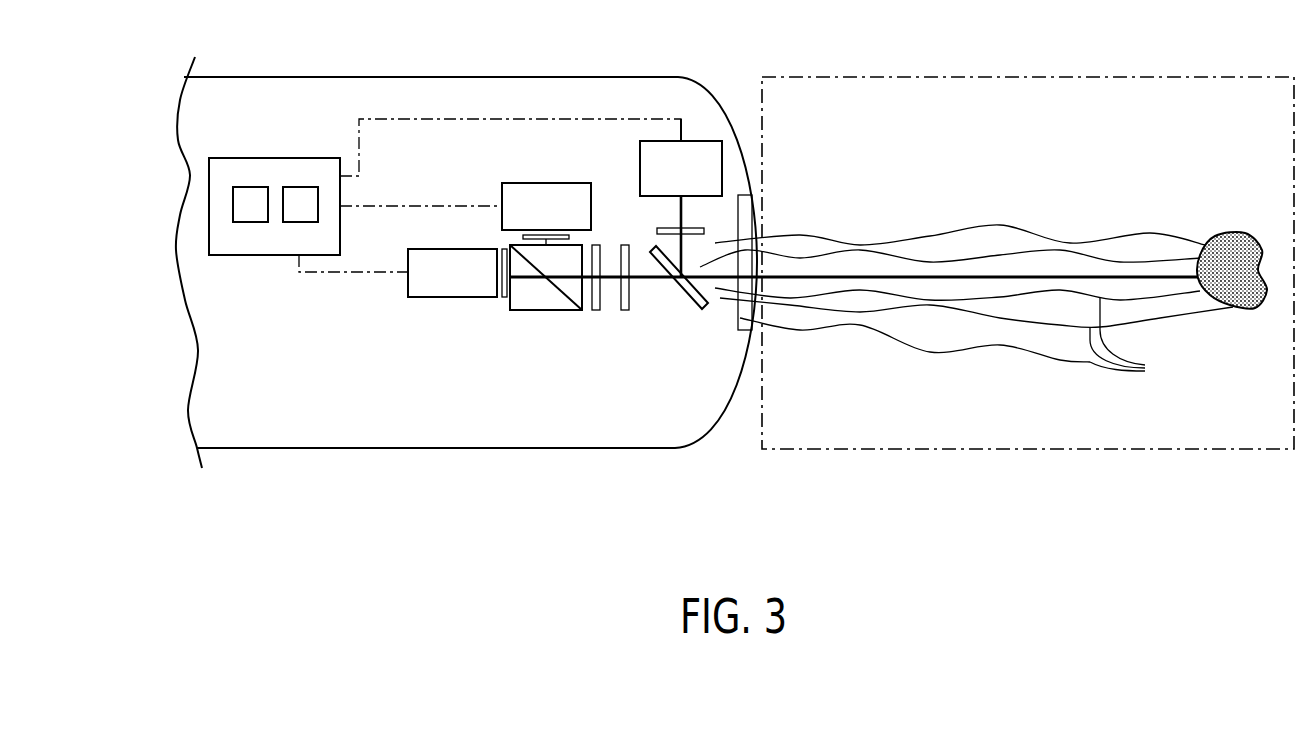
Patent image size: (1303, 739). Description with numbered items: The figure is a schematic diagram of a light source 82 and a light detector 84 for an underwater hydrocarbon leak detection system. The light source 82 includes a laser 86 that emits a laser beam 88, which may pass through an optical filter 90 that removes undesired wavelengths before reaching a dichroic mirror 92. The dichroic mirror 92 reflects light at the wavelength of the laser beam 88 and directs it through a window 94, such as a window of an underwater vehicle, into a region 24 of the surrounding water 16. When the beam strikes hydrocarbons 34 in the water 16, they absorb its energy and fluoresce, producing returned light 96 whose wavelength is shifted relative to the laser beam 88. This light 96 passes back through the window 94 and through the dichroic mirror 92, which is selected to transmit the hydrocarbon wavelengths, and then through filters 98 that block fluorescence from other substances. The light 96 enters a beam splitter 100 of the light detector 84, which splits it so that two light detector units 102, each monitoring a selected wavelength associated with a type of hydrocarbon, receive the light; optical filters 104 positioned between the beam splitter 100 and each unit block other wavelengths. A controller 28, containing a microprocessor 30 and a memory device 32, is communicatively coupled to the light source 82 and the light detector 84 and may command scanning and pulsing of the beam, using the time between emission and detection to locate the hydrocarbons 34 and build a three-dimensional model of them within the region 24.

The water 16 is at (995, 120).
The region 24 is at (1028, 228).
The controller 28 is at (260, 255).
The microprocessor 30 is at (248, 187).
The memory device 32 is at (300, 187).
The hydrocarbons 34 is at (1245, 310).
The light source 82 is at (659, 110).
The light detector 84 is at (470, 172).
The laser 86 is at (640, 152).
The laser beam 88 is at (681, 213).
The optical filter 90 is at (657, 231).
The dichroic mirror 92 is at (688, 292).
The window 94 is at (745, 332).
The light 96 is at (1133, 340).
The filters 98 is at (625, 310).
The beam splitter 100 is at (543, 310).
The light detector units 102 is at (560, 183).
The optical filters 104 is at (512, 252).